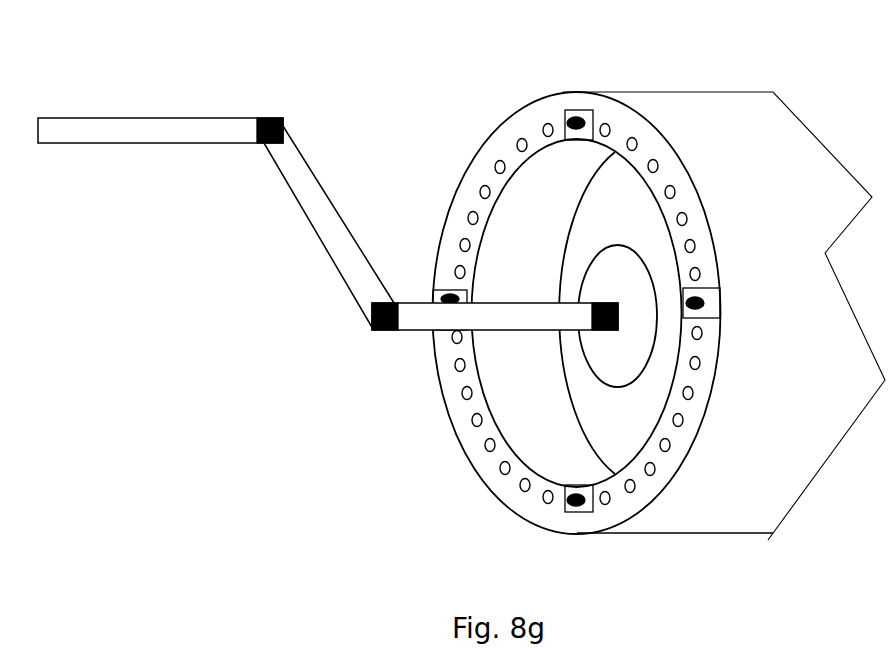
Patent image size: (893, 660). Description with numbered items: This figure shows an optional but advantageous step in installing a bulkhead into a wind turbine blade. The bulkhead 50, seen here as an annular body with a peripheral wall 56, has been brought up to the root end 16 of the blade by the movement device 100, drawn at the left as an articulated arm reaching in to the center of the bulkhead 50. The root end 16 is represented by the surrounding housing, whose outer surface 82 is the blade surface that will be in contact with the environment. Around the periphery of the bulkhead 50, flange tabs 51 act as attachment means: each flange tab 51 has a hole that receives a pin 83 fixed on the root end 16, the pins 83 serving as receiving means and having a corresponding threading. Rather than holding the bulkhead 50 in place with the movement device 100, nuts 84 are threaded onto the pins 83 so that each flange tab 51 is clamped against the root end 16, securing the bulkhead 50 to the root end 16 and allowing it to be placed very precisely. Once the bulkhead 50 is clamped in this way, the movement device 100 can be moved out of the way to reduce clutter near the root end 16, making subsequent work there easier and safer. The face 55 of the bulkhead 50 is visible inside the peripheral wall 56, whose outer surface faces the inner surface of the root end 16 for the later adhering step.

The movement device 100 is at (172, 77).
The root end 16 is at (482, 125).
The bulkhead 50 is at (724, 293).
The outer surface 82 is at (833, 353).
The peripheral wall 56 is at (518, 205).
The drum face 55 is at (592, 423).
The flange tab 51 is at (573, 118).
The pin 83 is at (565, 123).
The nut 84 is at (590, 112).